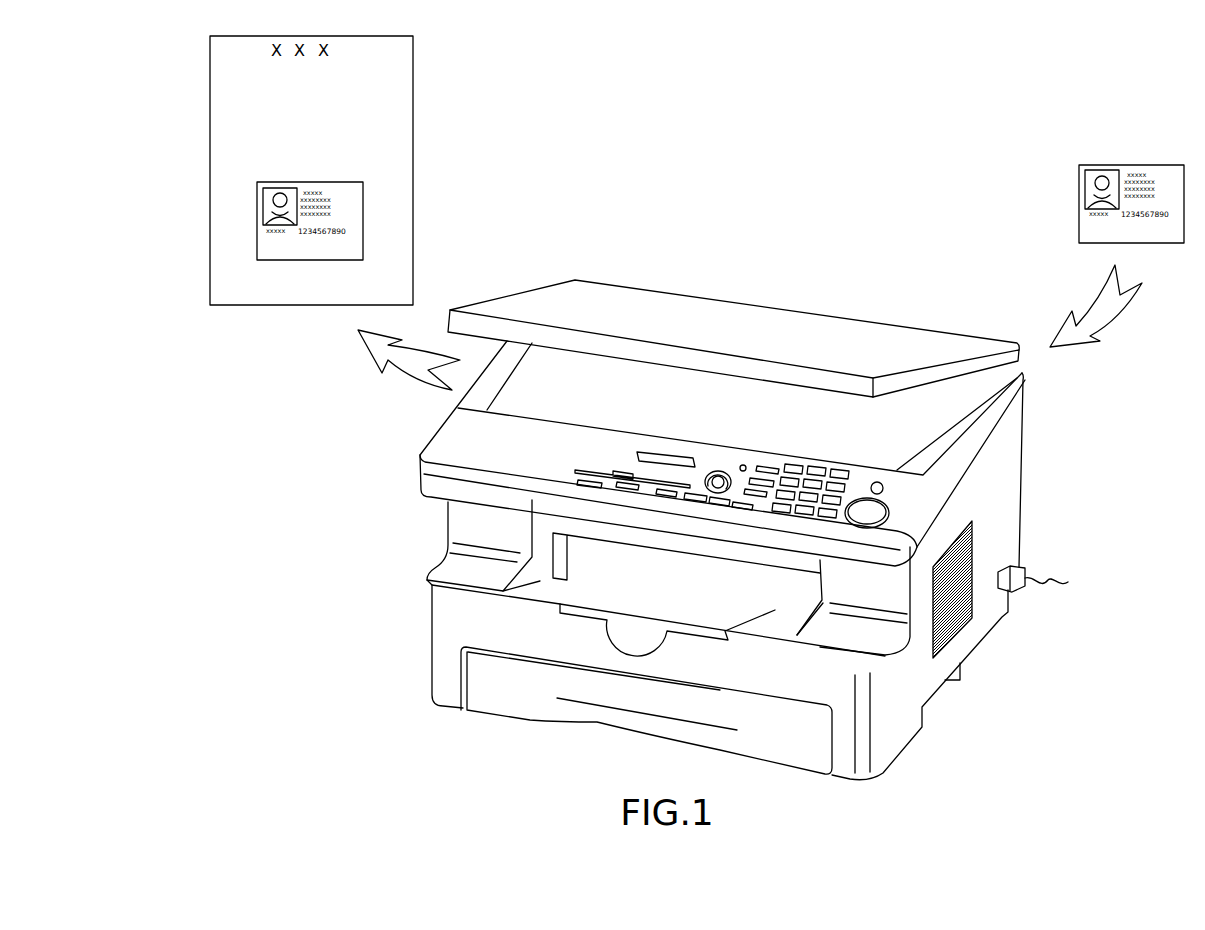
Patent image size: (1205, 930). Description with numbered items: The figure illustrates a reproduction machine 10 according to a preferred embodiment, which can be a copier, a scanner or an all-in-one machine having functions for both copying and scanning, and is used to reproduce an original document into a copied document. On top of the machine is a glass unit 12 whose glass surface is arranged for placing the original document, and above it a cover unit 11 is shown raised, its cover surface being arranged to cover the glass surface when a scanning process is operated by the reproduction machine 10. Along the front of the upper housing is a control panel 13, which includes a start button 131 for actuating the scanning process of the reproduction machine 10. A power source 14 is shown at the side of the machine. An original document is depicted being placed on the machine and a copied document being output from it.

The reproduction machine 10 is at (707, 457).
The cover unit 11 is at (560, 312).
The glass unit 12 is at (532, 400).
The control panel 13 is at (707, 482).
The start button 131 is at (872, 527).
The power source 14 is at (1005, 592).